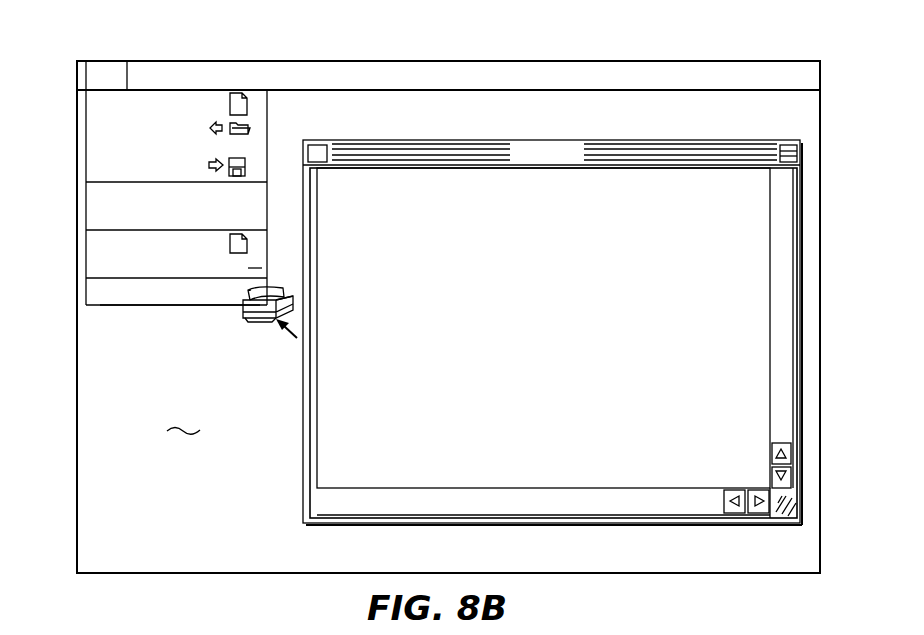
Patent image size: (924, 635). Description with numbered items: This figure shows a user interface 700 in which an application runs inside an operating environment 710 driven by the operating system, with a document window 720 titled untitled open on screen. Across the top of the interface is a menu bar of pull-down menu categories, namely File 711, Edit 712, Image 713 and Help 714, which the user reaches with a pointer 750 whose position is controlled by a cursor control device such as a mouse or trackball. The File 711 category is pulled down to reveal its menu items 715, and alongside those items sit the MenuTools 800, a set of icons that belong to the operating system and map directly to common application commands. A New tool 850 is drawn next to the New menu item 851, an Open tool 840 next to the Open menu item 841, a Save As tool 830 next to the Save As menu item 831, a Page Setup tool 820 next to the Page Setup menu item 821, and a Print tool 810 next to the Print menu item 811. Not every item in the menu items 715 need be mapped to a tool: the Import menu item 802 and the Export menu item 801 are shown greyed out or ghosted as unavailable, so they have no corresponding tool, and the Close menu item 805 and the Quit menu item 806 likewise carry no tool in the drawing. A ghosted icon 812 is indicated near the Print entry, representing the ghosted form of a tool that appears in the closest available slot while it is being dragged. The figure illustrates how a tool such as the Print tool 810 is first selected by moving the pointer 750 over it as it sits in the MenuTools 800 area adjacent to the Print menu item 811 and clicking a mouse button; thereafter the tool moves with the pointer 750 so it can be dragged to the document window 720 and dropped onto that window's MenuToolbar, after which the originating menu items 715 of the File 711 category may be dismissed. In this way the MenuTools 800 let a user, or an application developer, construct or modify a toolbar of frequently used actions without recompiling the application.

The user interface 700 is at (466, 48).
The operating environment 710 is at (206, 429).
The File menu category 711 is at (92, 64).
The Edit menu category 712 is at (144, 64).
The Image menu category 713 is at (207, 64).
The Help menu category 714 is at (294, 64).
The menu items 715 is at (140, 306).
The document window 720 is at (475, 348).
The pointer 750 is at (297, 338).
The MenuTools 800 is at (268, 208).
The Export menu item 801 is at (100, 220).
The Import menu item 802 is at (100, 196).
The Close menu item 805 is at (100, 146).
The Quit menu item 806 is at (100, 292).
The Print tool 810 is at (292, 298).
The Print menu item 811 is at (100, 267).
The ghosted icon 812 is at (250, 268).
The Page Setup tool 820 is at (252, 244).
The Page Setup menu item 821 is at (100, 243).
The Save As tool 830 is at (246, 157).
The Save As menu item 831 is at (100, 167).
The Open tool 840 is at (249, 127).
The Open menu item 841 is at (100, 125).
The New tool 850 is at (248, 94).
The New menu item 851 is at (100, 104).